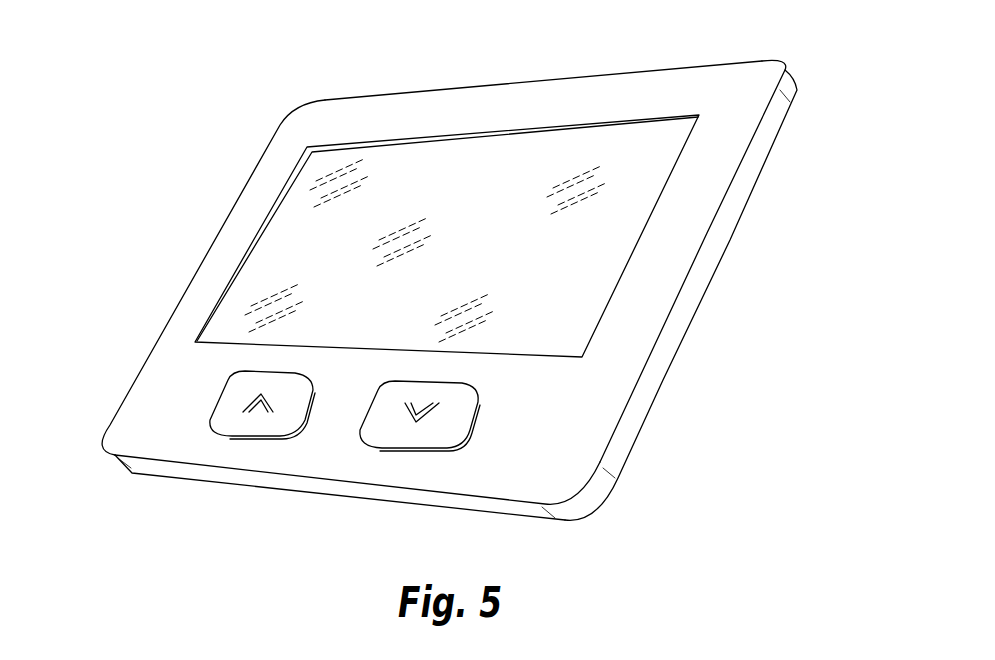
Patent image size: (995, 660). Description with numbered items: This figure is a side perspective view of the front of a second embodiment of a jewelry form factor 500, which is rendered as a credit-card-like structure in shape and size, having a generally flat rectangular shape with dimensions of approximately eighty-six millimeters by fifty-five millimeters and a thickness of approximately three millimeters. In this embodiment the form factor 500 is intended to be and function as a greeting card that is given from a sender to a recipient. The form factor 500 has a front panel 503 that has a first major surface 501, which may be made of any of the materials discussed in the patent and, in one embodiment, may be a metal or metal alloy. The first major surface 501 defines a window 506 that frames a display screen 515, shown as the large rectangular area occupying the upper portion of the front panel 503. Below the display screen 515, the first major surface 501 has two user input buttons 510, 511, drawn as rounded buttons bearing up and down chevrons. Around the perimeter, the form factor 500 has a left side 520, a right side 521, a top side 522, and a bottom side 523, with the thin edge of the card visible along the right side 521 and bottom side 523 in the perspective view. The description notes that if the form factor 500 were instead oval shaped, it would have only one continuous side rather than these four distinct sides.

The jewelry form factor 500 is at (460, 291).
The first major surface 501 is at (439, 291).
The front panel 503 is at (662, 280).
The window 506 is at (268, 241).
The user input button 510 is at (406, 451).
The user input button 511 is at (218, 428).
The display screen 515 is at (408, 236).
The left side 520 is at (103, 400).
The right side 521 is at (767, 174).
The top side 522 is at (428, 79).
The bottom side 523 is at (297, 496).